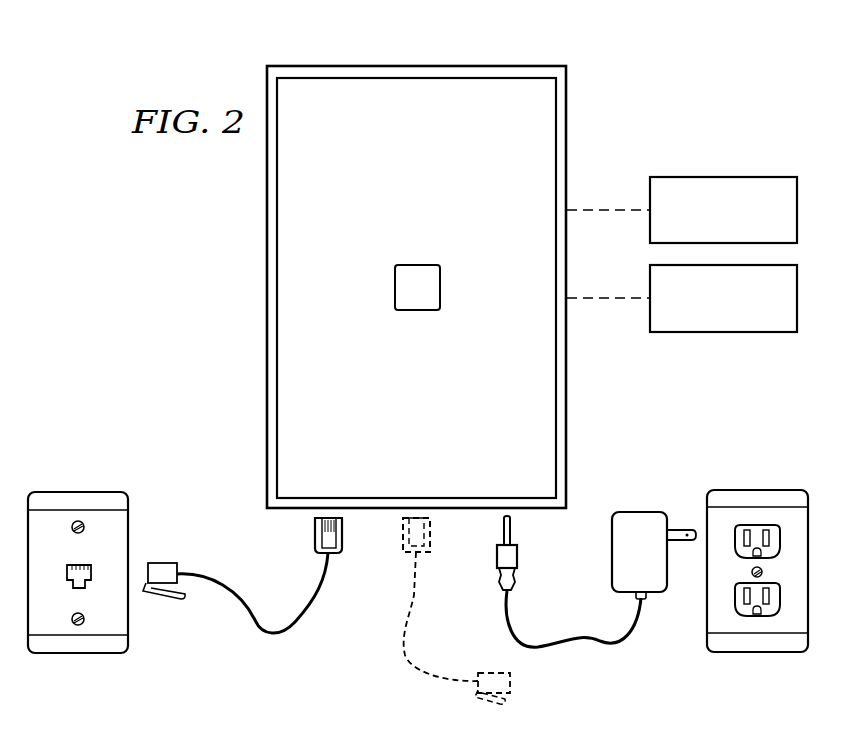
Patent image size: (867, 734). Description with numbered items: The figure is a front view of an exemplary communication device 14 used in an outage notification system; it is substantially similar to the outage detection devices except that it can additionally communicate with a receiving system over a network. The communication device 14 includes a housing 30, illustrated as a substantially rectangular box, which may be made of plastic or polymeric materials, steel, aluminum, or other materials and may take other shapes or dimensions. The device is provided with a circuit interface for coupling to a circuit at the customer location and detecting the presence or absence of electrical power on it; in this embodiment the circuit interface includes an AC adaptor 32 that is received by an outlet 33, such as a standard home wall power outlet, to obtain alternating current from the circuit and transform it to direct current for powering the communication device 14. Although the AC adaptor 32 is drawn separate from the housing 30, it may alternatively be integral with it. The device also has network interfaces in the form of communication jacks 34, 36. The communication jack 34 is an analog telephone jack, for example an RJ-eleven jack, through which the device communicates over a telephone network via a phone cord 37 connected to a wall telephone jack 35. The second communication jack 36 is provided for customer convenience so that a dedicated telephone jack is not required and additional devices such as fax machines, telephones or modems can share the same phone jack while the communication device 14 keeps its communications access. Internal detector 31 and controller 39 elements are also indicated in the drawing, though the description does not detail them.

The communication device 14 is at (517, 66).
The housing 30 is at (268, 340).
The detector 31 is at (732, 177).
The controller 39 is at (732, 332).
The AC adaptor 32 is at (640, 512).
The outlet 33 is at (757, 490).
The communication jack 34 is at (316, 535).
The wall telephone jack 35 is at (78, 492).
The communication jack 36 is at (430, 540).
The phone cord 37 is at (258, 637).